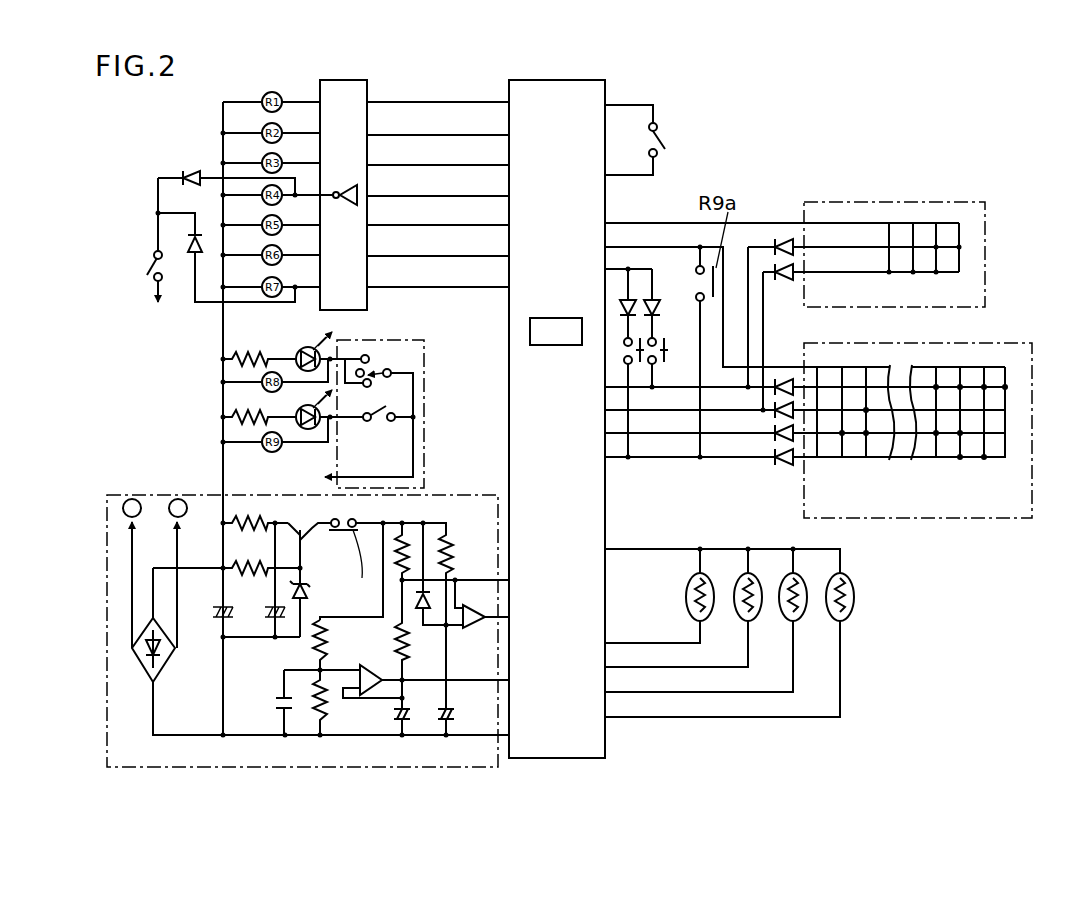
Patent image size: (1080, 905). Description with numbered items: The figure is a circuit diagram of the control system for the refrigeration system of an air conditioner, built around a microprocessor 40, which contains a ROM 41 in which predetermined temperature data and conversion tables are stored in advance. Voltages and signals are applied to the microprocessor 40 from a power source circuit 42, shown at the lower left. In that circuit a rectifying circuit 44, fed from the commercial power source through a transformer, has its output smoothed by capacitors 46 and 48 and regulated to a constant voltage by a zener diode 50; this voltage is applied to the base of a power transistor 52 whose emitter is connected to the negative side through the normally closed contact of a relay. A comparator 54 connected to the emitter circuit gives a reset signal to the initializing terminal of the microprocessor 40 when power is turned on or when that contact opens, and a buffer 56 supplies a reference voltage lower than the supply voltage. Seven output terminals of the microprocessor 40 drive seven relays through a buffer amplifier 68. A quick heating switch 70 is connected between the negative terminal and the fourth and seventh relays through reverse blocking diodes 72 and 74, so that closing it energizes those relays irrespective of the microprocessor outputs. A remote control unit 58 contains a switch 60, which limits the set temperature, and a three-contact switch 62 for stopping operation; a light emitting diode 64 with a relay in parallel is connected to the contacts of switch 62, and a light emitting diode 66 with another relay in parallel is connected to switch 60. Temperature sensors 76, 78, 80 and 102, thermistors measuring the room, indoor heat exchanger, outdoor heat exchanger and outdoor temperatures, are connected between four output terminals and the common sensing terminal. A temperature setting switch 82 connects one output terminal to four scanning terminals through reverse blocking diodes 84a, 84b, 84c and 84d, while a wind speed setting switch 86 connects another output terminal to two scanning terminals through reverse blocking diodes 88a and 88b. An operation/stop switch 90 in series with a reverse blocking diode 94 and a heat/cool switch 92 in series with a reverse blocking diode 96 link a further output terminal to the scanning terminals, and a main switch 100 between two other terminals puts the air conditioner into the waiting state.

The microprocessor 40 is at (596, 90).
The ROM 41 is at (548, 320).
The power source circuit 42 is at (281, 631).
The rectifying circuit 44 is at (146, 658).
The capacitor 46 is at (219, 622).
The capacitor 48 is at (271, 622).
The zener diode 50 is at (308, 594).
The power transistor 52 is at (306, 538).
The comparator 54 is at (474, 630).
The buffer 56 is at (373, 696).
The remote control unit 58 is at (430, 342).
The switch 60 is at (388, 408).
The switch 62 is at (392, 366).
The light emitting diode 64 is at (298, 352).
The light emitting diode 66 is at (313, 431).
The buffer amplifier 68 is at (358, 90).
The quick heating switch 70 is at (148, 274).
The reverse blocking diode 72 is at (190, 172).
The reverse blocking diode 74 is at (190, 262).
The temperature sensor 76 is at (714, 610).
The temperature sensor 78 is at (760, 615).
The temperature sensor 80 is at (806, 615).
The temperature setting switch 82 is at (1033, 368).
The reverse blocking diode 84a is at (782, 380).
The reverse blocking diode 84b is at (780, 416).
The reverse blocking diode 84c is at (778, 440).
The reverse blocking diode 84d is at (783, 466).
The wind speed setting switch 86 is at (987, 213).
The reverse blocking diode 88a is at (785, 240).
The reverse blocking diode 88b is at (784, 281).
The operation/stop switch 90 is at (664, 348).
The heat/cool switch 92 is at (654, 364).
The reverse blocking diode 94 is at (662, 292).
The reverse blocking diode 96 is at (631, 300).
The main switch 100 is at (660, 136).
The temperature sensor 102 is at (853, 615).